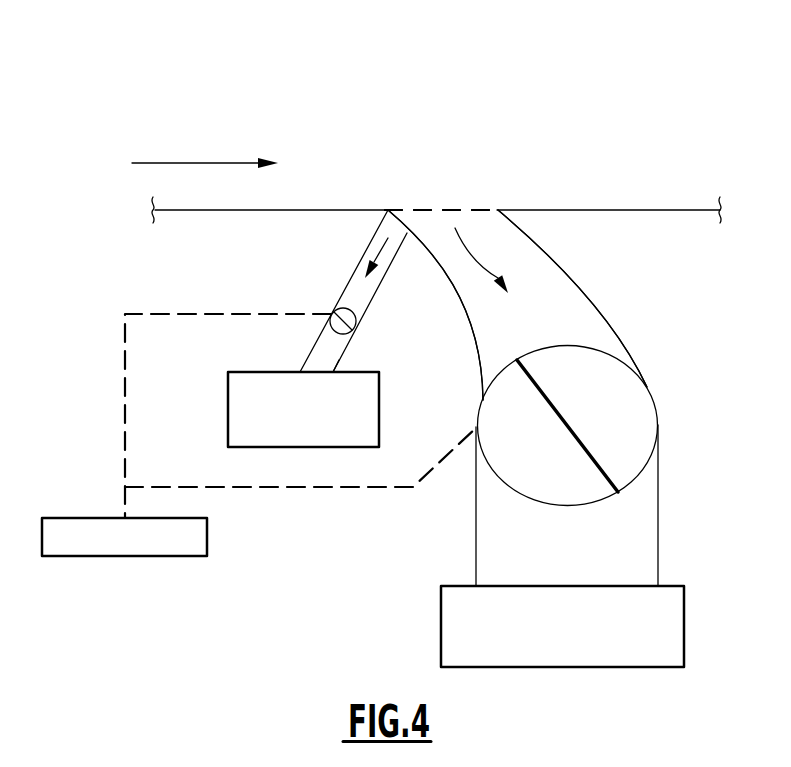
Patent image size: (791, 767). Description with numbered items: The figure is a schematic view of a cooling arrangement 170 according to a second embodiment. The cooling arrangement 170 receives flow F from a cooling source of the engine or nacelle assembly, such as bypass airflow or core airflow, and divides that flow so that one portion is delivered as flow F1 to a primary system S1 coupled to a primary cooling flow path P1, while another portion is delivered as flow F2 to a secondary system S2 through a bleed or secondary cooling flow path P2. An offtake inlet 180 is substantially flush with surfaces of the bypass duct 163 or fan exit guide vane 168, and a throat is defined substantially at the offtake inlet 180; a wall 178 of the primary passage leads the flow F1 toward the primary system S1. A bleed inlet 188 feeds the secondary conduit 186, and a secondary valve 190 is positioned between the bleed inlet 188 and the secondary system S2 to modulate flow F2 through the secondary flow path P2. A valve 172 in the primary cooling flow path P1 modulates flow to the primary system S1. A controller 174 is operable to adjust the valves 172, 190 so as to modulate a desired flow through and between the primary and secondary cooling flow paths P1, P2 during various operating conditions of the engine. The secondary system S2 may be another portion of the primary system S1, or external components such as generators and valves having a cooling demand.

The cooling arrangement 170 is at (106, 78).
The offtake inlet 180 is at (435, 207).
The bypass duct 163 is at (634, 207).
The fan exit guide vane 168 is at (435, 305).
The conduit wall 178 is at (562, 267).
The bleed inlet 188 is at (381, 222).
The secondary conduit 186 is at (370, 302).
The secondary valve 190 is at (328, 323).
The valve 172 is at (658, 414).
The controller 174 is at (207, 536).
The flow F is at (197, 163).
The flow F1 is at (491, 261).
The flow F2 is at (391, 262).
The primary cooling flow path P1 is at (658, 525).
The secondary cooling flow path P2 is at (344, 347).
The primary system S1 is at (684, 627).
The secondary system S2 is at (228, 398).